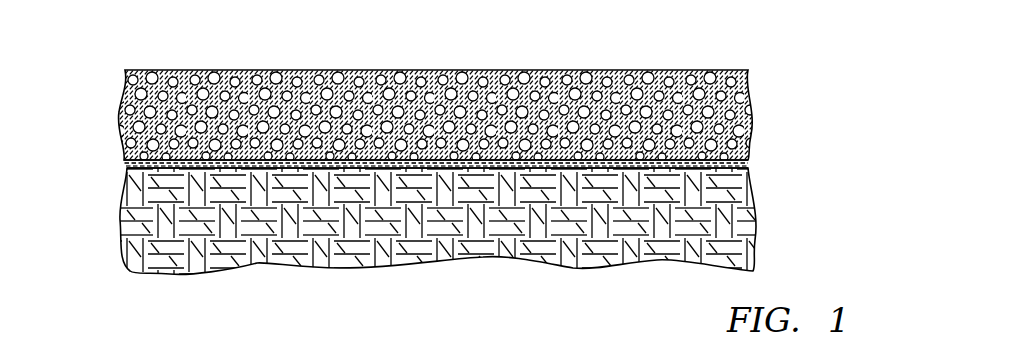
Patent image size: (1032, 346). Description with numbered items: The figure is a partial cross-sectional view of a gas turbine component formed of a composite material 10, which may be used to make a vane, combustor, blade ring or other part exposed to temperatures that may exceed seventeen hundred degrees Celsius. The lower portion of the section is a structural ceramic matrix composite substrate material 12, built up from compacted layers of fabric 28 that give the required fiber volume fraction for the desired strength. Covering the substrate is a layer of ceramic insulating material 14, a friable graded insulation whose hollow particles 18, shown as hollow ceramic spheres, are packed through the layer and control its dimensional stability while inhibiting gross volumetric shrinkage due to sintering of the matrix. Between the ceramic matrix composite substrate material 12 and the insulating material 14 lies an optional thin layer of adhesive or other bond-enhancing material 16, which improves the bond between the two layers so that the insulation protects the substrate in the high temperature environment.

The composite material 10 is at (440, 144).
The ceramic matrix composite substrate material 12 is at (440, 223).
The ceramic insulating material 14 is at (477, 85).
The bond-enhancing material 16 is at (748, 163).
The hollow particles 18 is at (520, 100).
The layers of fabric 28 is at (217, 230).